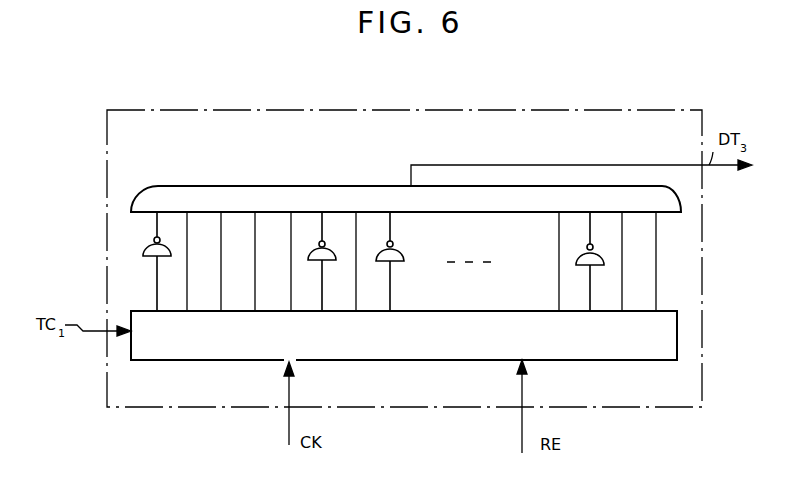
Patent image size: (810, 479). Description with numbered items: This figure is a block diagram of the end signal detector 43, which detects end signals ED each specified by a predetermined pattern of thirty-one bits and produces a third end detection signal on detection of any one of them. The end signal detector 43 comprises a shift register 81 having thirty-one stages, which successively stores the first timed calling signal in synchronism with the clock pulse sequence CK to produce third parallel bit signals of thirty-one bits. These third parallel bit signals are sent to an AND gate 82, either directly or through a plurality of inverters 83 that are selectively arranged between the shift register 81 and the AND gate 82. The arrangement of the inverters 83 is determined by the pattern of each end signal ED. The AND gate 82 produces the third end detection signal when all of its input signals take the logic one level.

The end signal detector 43 is at (704, 340).
The shift register 81 is at (262, 361).
The AND gate 82 is at (262, 185).
The inverters 83 is at (150, 257).